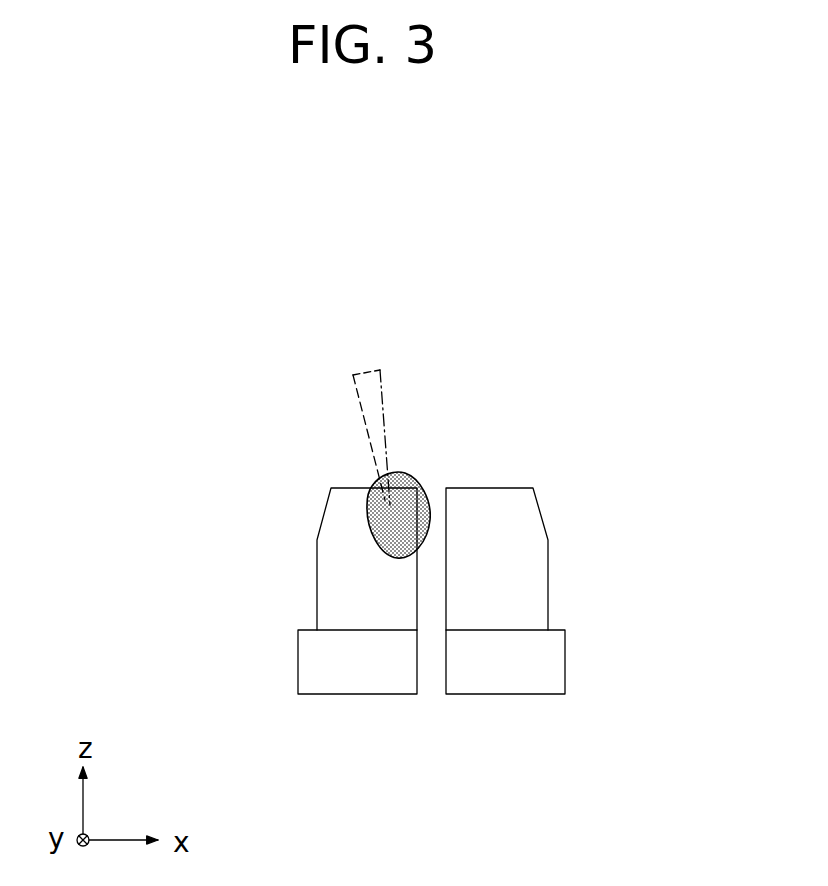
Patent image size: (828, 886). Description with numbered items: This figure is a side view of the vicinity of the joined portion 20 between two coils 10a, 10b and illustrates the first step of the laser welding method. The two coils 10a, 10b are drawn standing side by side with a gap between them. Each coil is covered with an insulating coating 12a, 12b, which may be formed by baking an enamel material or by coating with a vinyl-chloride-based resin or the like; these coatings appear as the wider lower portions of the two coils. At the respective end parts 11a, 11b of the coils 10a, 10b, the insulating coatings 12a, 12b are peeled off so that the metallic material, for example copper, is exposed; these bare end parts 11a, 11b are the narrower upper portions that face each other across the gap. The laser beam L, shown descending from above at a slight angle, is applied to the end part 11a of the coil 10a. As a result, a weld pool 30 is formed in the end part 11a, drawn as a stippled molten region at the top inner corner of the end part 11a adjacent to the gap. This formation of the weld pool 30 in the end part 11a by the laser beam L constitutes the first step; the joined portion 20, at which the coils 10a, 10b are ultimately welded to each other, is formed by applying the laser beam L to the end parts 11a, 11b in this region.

The coil 10a is at (267, 541).
The coil 10b is at (569, 542).
The end part 11a is at (316, 577).
The end part 11b is at (548, 572).
The insulating coating 12a is at (298, 663).
The insulating coating 12b is at (565, 663).
The joined portion 20 is at (422, 285).
The weld pool 30 is at (418, 480).
The laser beam L is at (363, 418).